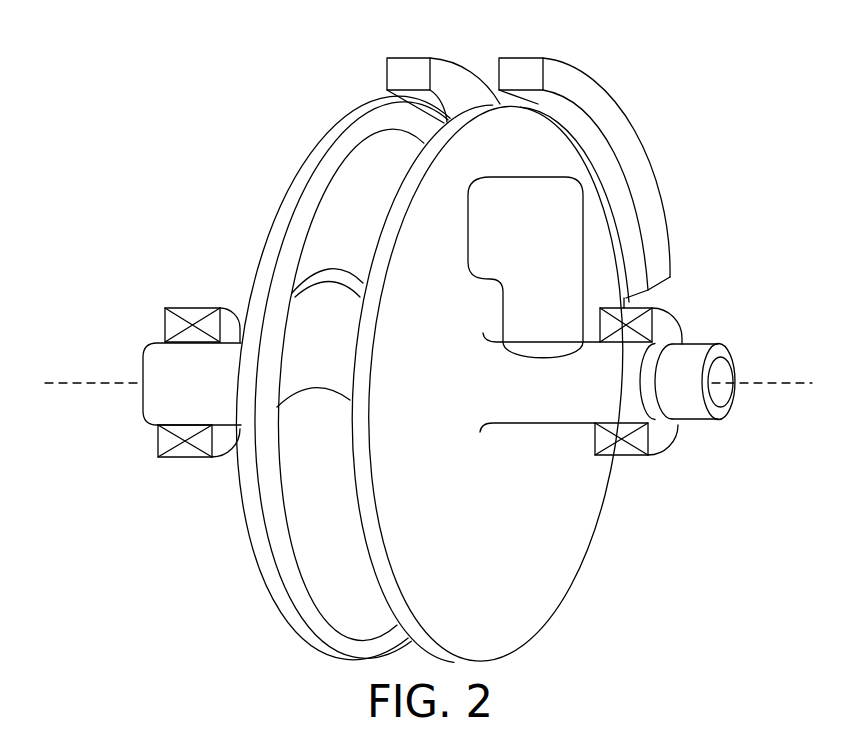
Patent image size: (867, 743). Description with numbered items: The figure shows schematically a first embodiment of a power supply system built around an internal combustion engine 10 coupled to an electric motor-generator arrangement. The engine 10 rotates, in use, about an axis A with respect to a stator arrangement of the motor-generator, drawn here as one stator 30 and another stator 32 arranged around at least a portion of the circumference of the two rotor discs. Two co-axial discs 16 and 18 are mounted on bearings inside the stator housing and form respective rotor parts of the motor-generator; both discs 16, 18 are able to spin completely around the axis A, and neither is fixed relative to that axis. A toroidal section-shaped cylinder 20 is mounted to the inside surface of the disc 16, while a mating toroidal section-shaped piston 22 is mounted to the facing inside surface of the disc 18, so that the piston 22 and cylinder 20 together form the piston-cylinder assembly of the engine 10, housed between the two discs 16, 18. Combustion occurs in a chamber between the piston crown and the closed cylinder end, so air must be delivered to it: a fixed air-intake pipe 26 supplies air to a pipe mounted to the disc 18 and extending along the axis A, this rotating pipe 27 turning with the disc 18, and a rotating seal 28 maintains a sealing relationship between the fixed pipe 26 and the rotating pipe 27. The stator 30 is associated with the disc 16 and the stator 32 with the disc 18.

The internal combustion engine 10 is at (218, 240).
The disc 16 is at (343, 143).
The disc 18 is at (558, 147).
The toroidal section-shaped cylinder 20 is at (343, 203).
The toroidal section-shaped piston 22 is at (313, 323).
The fixed air-intake pipe 26 is at (699, 352).
The rotating pipe 27 is at (531, 413).
The rotating seal 28 is at (644, 388).
The stator 30 is at (409, 66).
The stator 32 is at (568, 73).